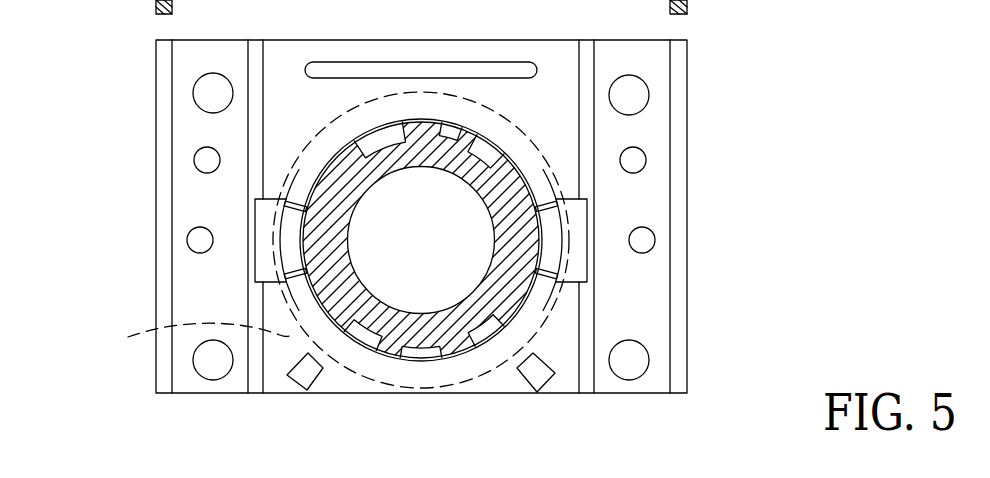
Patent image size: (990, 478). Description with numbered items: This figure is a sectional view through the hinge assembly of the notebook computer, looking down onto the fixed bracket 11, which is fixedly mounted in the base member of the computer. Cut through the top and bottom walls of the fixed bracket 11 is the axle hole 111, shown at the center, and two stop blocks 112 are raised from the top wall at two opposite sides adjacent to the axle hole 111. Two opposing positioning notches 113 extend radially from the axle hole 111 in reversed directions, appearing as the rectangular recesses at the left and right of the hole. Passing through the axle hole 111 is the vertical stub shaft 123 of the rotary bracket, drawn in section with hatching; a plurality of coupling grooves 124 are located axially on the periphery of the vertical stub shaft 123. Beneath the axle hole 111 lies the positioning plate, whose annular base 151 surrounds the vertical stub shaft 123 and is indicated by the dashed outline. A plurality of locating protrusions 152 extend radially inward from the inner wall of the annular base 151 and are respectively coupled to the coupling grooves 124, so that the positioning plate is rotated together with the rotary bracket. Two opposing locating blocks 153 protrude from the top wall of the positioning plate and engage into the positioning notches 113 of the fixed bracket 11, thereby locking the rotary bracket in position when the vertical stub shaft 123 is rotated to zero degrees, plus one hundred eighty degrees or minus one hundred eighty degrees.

The fixed bracket 11 is at (686, 82).
The axle hole 111 is at (343, 147).
The stop blocks 112 is at (298, 372).
The positioning notches 113 is at (262, 217).
The vertical stub shaft 123 is at (335, 202).
The coupling grooves 124 is at (480, 160).
The annular base 151 is at (329, 240).
The locating protrusions 152 is at (460, 133).
The locating blocks 153 is at (280, 246).